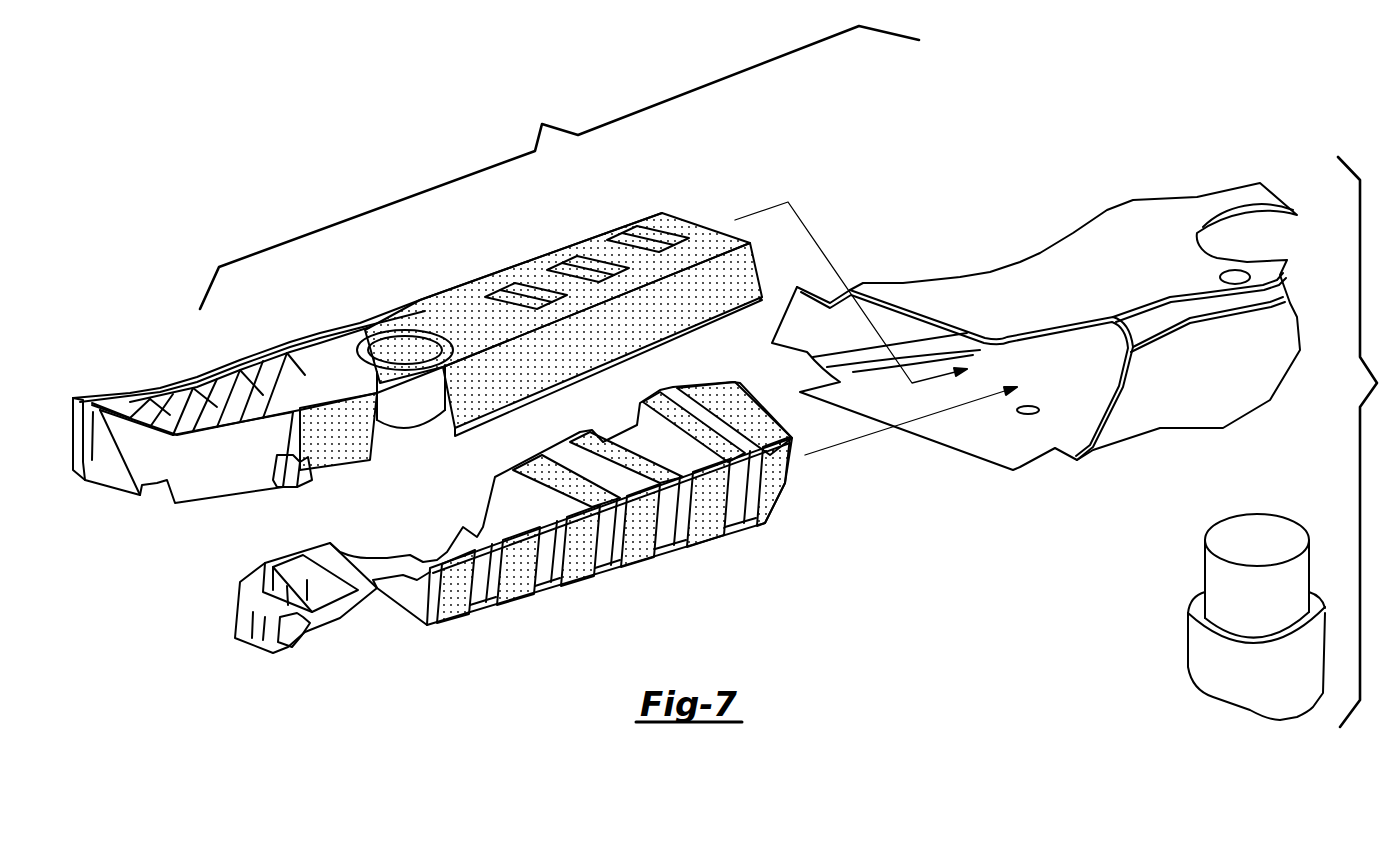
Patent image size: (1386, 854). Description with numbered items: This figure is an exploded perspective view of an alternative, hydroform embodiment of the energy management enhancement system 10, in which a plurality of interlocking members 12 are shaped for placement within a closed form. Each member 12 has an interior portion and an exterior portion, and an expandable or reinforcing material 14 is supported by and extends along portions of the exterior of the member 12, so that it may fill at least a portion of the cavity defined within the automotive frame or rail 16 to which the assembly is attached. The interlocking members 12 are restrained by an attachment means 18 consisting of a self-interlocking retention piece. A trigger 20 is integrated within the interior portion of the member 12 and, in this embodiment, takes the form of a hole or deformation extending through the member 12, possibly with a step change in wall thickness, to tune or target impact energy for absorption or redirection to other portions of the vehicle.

The energy management enhancement system 10 is at (788, 376).
The member 12 is at (192, 463).
The reinforcing material 14 is at (667, 233).
The frame or rail 16 is at (1126, 222).
The attachment means 18 is at (1215, 662).
The trigger 20 is at (392, 352).